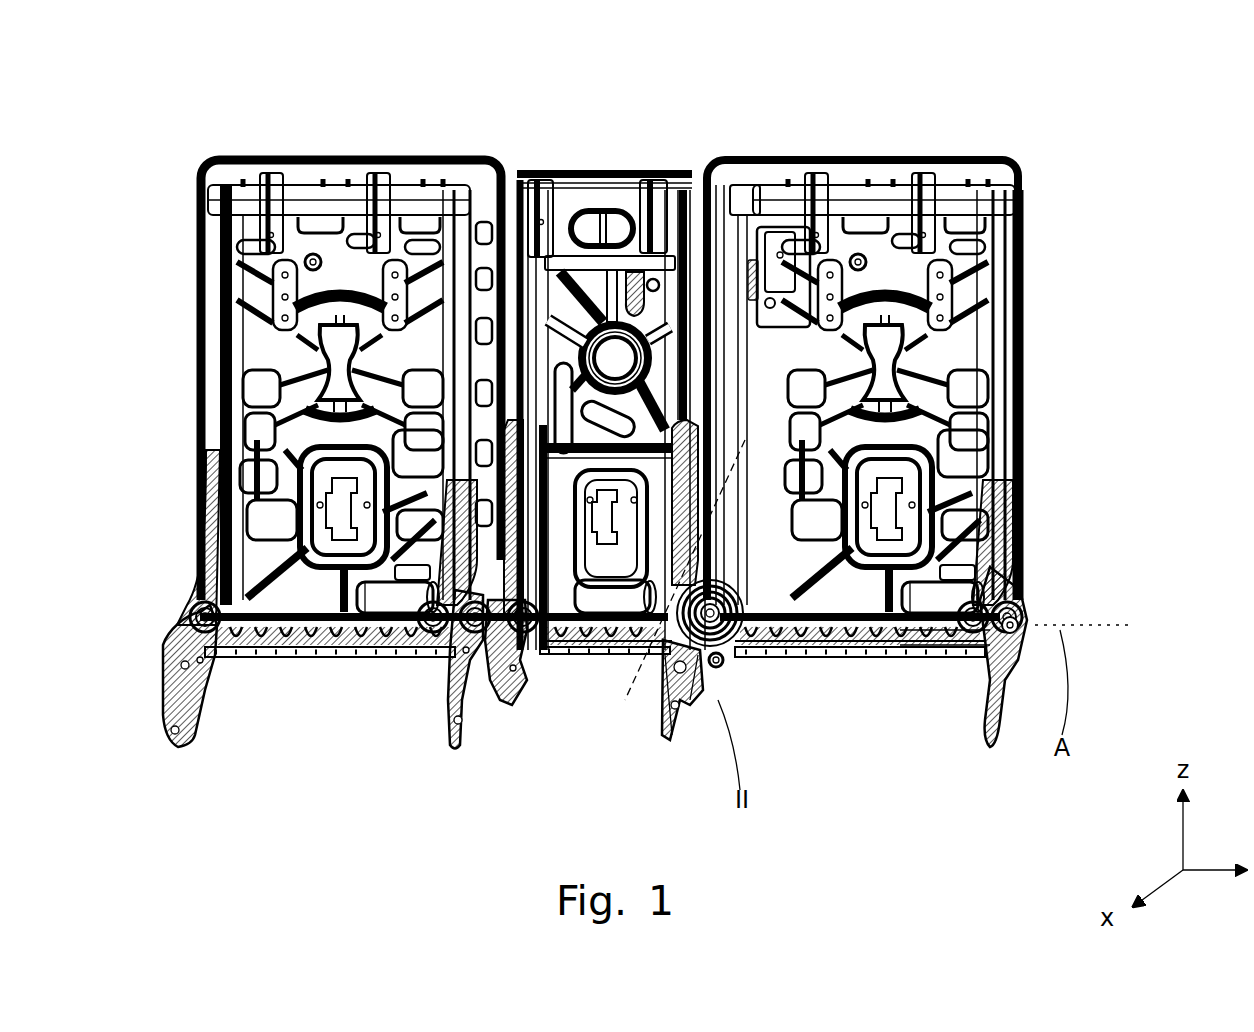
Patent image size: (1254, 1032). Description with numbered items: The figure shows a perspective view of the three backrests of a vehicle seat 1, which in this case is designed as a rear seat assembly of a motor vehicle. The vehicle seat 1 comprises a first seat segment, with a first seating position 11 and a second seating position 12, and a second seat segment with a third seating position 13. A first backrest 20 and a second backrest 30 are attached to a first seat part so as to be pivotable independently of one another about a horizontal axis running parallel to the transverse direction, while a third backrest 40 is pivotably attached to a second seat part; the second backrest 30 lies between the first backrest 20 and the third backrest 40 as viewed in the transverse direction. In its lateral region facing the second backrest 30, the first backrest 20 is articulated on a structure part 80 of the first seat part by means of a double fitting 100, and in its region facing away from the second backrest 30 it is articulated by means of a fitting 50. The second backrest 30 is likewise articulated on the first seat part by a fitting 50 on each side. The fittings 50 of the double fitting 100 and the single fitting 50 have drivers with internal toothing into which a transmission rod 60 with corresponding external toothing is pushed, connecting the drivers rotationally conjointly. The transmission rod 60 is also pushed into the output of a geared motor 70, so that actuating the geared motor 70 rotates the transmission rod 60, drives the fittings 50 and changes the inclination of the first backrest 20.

The vehicle seat 1 is at (675, 125).
The first seating position 11 is at (840, 745).
The second seating position 12 is at (580, 750).
The third seating position 13 is at (330, 750).
The first backrest 20 is at (892, 160).
The second backrest 30 is at (580, 160).
The third backrest 40 is at (312, 160).
The fitting 50 is at (510, 705).
The transmission rod 60 is at (555, 655).
The geared motor 70 is at (927, 658).
The structure part 80 is at (668, 740).
The double fitting 100 is at (718, 665).